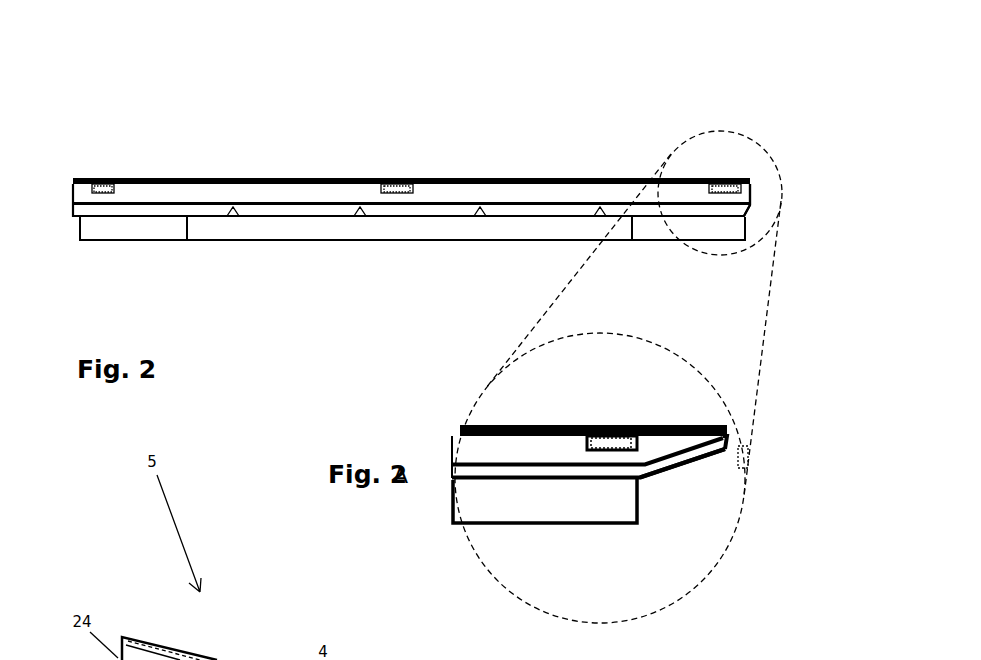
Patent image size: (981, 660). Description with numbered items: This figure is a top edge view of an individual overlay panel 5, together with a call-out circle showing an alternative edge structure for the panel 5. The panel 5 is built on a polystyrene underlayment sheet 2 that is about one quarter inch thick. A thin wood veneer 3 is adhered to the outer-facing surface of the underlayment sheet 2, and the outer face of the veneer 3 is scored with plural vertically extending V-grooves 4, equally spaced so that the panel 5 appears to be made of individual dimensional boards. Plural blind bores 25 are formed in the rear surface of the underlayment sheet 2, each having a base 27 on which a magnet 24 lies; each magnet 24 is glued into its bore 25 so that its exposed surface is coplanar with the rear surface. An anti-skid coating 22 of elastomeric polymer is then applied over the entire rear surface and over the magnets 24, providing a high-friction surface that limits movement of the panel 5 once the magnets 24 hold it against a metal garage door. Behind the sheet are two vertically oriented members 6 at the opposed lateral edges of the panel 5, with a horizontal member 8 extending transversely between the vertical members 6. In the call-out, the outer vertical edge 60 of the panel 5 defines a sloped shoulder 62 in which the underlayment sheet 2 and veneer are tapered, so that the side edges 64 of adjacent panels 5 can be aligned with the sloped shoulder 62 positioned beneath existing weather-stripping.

In FIG. 2, the panel 5 is at (474, 102).
In FIG. 2, the underlayment sheet 2 is at (73, 183).
In FIG. 2A, the underlayment sheet 2 is at (655, 445).
In FIG. 2, the anti-skid coating 22 is at (193, 180).
In FIG. 2A, the anti-skid coating 22 is at (517, 425).
In FIG. 2, the wood veneer 3 is at (653, 207).
In FIG. 2A, the wood veneer 3 is at (580, 472).
In FIG. 2, the blind bore 25 is at (93, 183).
In FIG. 2A, the blind bore 25 is at (583, 423).
In FIG. 2, the magnet 24 is at (105, 185).
In FIG. 2A, the magnet 24 is at (620, 440).
In FIG. 2, the V-groove 4 is at (233, 213).
In FIG. 2, the base 27 is at (730, 195).
In FIG. 2, the vertical member 6 is at (138, 230).
In FIG. 2A, the vertical member 6 is at (580, 502).
In FIG. 2, the horizontal member 8 is at (316, 232).
In FIG. 2A, the side edge 64 is at (728, 432).
In FIG. 2A, the outer vertical edge 60 is at (735, 455).
In FIG. 2A, the sloped shoulder 62 is at (700, 458).